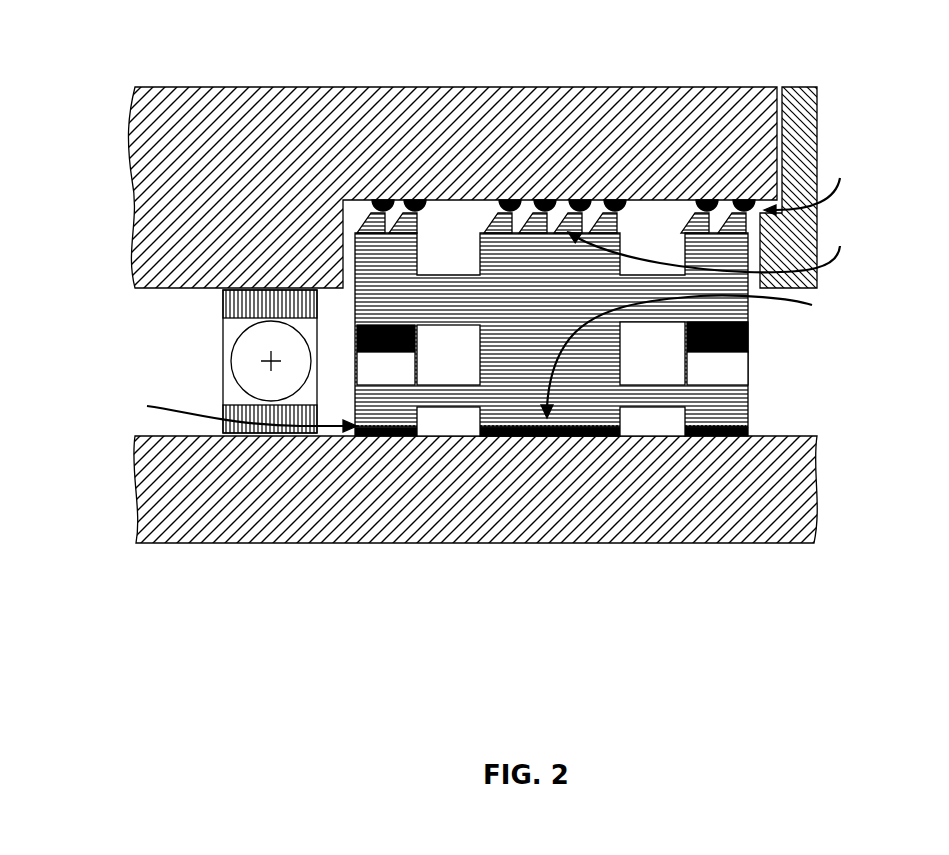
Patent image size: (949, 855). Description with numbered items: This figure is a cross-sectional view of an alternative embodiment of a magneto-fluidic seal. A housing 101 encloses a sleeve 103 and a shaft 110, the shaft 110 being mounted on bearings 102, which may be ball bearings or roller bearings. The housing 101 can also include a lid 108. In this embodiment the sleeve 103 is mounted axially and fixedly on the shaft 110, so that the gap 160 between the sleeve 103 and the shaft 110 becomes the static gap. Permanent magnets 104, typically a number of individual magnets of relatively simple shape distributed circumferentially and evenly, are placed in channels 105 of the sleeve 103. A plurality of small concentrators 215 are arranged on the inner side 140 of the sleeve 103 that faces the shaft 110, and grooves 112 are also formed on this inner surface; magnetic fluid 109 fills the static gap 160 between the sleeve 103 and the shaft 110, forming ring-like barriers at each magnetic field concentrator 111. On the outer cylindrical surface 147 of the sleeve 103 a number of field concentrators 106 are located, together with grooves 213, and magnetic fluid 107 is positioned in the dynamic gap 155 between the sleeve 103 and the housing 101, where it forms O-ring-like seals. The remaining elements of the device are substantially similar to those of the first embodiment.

The housing 101 is at (215, 182).
The bearings 102 is at (259, 303).
The sleeve 103 is at (368, 222).
The permanent magnets 104 is at (408, 325).
The channels 105 is at (451, 342).
The field concentrators 106 is at (505, 220).
The magnetic fluid 107 is at (578, 205).
The lid 108 is at (800, 150).
The magnetic fluid 109 is at (735, 433).
The shaft 110 is at (788, 471).
The magnetic field concentrators 111 is at (604, 432).
The grooves 112 is at (445, 418).
The inner surface of the sleeve 140 is at (693, 355).
The outer cylindrical surface of the sleeve 147 is at (709, 246).
The dynamic gap 155 is at (812, 182).
The static gap 160 is at (231, 416).
The grooves 213 is at (470, 224).
The small concentrators 215 is at (717, 423).